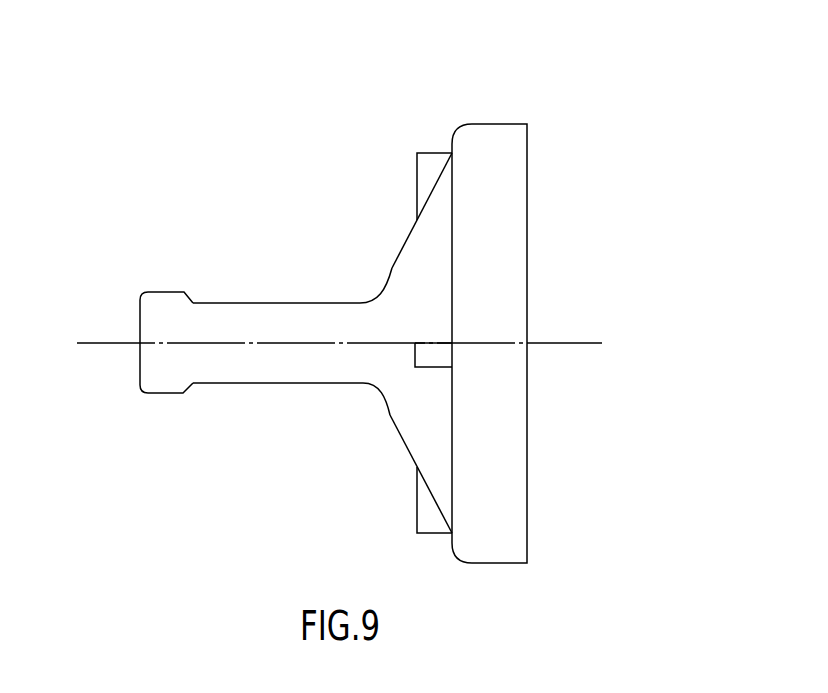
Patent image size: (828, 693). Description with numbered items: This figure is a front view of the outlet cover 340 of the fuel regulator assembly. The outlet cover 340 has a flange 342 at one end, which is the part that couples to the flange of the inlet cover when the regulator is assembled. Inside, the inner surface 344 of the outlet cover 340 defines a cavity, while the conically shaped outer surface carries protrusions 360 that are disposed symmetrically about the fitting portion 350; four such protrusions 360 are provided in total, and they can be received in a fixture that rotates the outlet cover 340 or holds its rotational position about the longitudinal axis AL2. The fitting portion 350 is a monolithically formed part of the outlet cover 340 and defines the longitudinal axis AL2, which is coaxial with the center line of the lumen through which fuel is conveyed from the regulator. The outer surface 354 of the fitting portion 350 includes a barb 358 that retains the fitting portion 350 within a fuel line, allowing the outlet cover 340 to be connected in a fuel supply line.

The outlet cover 340 is at (262, 108).
The flange 342 is at (515, 148).
The inner surface 344 is at (398, 262).
The fitting portion 350 is at (296, 323).
The outer surface 354 is at (272, 385).
The barb 358 is at (164, 378).
The protrusions 360 is at (427, 163).
The longitudinal axis AL2 is at (580, 343).